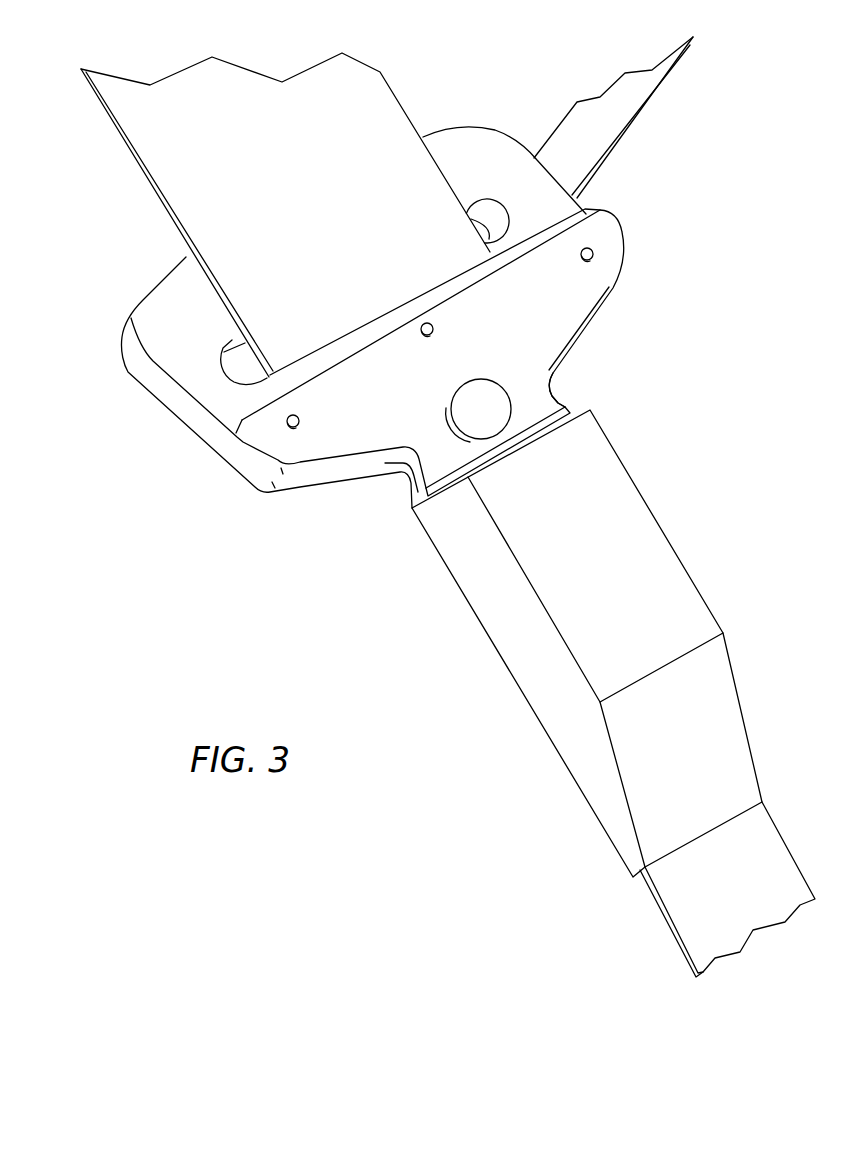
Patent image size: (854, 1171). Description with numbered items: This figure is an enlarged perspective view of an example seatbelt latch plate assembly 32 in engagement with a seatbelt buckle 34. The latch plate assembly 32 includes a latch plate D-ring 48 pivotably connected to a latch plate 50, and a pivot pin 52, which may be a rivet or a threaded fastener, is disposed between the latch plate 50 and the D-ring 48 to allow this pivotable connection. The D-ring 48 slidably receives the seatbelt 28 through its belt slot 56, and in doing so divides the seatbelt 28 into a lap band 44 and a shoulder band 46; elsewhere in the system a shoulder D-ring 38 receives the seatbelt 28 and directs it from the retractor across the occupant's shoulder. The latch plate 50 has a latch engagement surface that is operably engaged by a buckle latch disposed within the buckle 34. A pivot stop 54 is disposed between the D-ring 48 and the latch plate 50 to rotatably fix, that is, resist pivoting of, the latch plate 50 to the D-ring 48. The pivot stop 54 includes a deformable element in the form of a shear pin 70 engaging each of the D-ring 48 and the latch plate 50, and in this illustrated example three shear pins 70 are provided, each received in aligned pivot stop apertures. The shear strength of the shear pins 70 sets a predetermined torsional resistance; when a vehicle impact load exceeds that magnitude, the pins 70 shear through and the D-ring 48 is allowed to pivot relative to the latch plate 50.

The seatbelt 28 is at (276, 197).
The latch plate assembly 32 is at (131, 374).
The seatbelt buckle 34 is at (626, 470).
The shoulder D-ring 38 is at (660, 920).
The lap band 44 is at (627, 130).
The shoulder band 46 is at (131, 154).
The latch plate D-ring 48 is at (158, 293).
The latch plate 50 is at (560, 394).
The pivot pin 52 is at (449, 432).
The pivot stop 54 is at (473, 352).
The belt slot 56 is at (483, 236).
The shear pin 70 is at (579, 259).